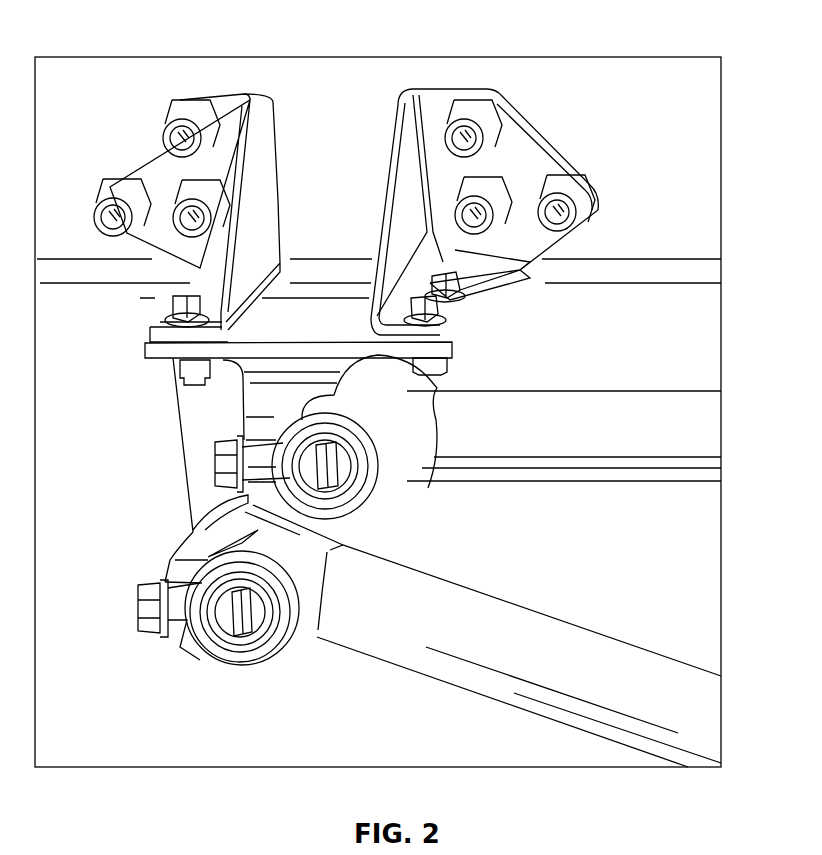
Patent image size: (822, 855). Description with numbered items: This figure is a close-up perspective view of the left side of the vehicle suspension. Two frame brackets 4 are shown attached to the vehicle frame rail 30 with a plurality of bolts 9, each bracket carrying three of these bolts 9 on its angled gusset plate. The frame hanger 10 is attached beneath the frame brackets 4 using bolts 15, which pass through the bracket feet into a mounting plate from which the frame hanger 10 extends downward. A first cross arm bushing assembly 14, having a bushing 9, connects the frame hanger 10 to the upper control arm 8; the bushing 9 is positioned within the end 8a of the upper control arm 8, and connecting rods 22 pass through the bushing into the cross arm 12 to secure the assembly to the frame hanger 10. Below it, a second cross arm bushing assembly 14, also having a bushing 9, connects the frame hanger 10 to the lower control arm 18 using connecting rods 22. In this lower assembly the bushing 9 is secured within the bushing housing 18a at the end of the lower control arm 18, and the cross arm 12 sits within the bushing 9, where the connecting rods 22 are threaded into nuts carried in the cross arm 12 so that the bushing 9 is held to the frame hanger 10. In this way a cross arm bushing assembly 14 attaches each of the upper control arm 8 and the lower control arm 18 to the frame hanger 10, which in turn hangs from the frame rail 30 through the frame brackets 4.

The frame bracket 4 is at (230, 105).
The upper control arm 8 is at (586, 391).
The end of upper control arm 8a is at (391, 403).
The bolt / bushing 9 is at (184, 118).
The frame hanger 10 is at (180, 417).
The cross arm 12 is at (314, 485).
The cross arm bushing assembly 14 is at (388, 503).
The bolt 15 is at (180, 315).
The lower control arm 18 is at (417, 677).
The bushing housing 18a is at (317, 603).
The connecting rod 22 is at (213, 465).
The vehicle frame rail 30 is at (673, 125).